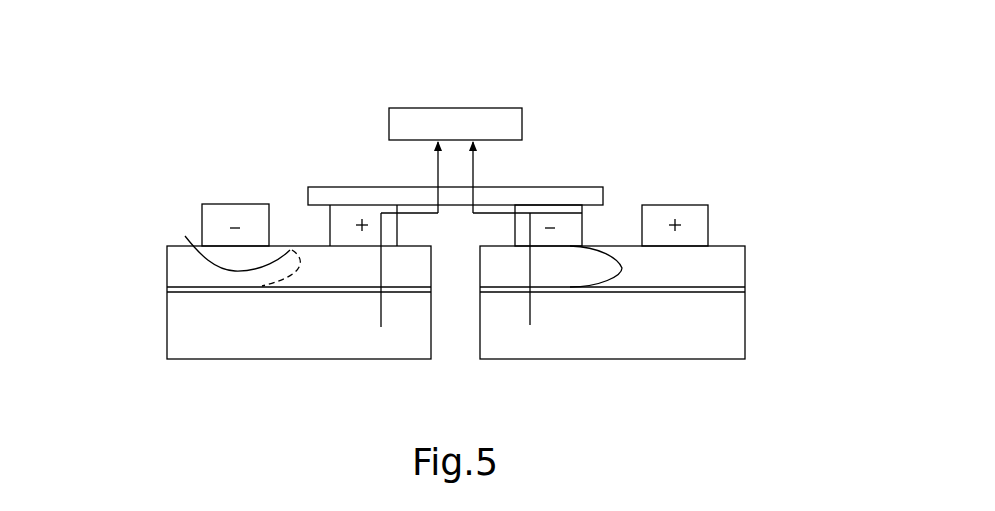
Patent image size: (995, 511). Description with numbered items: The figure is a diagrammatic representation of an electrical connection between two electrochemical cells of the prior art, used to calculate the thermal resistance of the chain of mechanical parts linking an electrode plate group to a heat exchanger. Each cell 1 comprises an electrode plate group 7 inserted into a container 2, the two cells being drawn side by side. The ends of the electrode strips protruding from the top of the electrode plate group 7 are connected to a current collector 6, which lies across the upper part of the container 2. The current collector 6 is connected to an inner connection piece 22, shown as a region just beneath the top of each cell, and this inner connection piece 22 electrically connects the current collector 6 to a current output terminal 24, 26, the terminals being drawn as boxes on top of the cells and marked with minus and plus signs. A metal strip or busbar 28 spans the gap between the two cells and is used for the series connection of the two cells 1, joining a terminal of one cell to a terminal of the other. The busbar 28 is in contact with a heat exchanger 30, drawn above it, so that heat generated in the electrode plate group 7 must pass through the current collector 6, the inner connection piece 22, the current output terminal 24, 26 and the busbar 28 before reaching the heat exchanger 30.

The cell 1 is at (138, 165).
The container 2 is at (167, 323).
The current collector 6 is at (167, 288).
The electrode plate group 7 is at (257, 342).
The inner connection piece 22 is at (185, 236).
The current output terminal 24 is at (217, 215).
The current output terminal 26 is at (342, 225).
The busbar 28 is at (557, 187).
The heat exchanger 30 is at (462, 117).